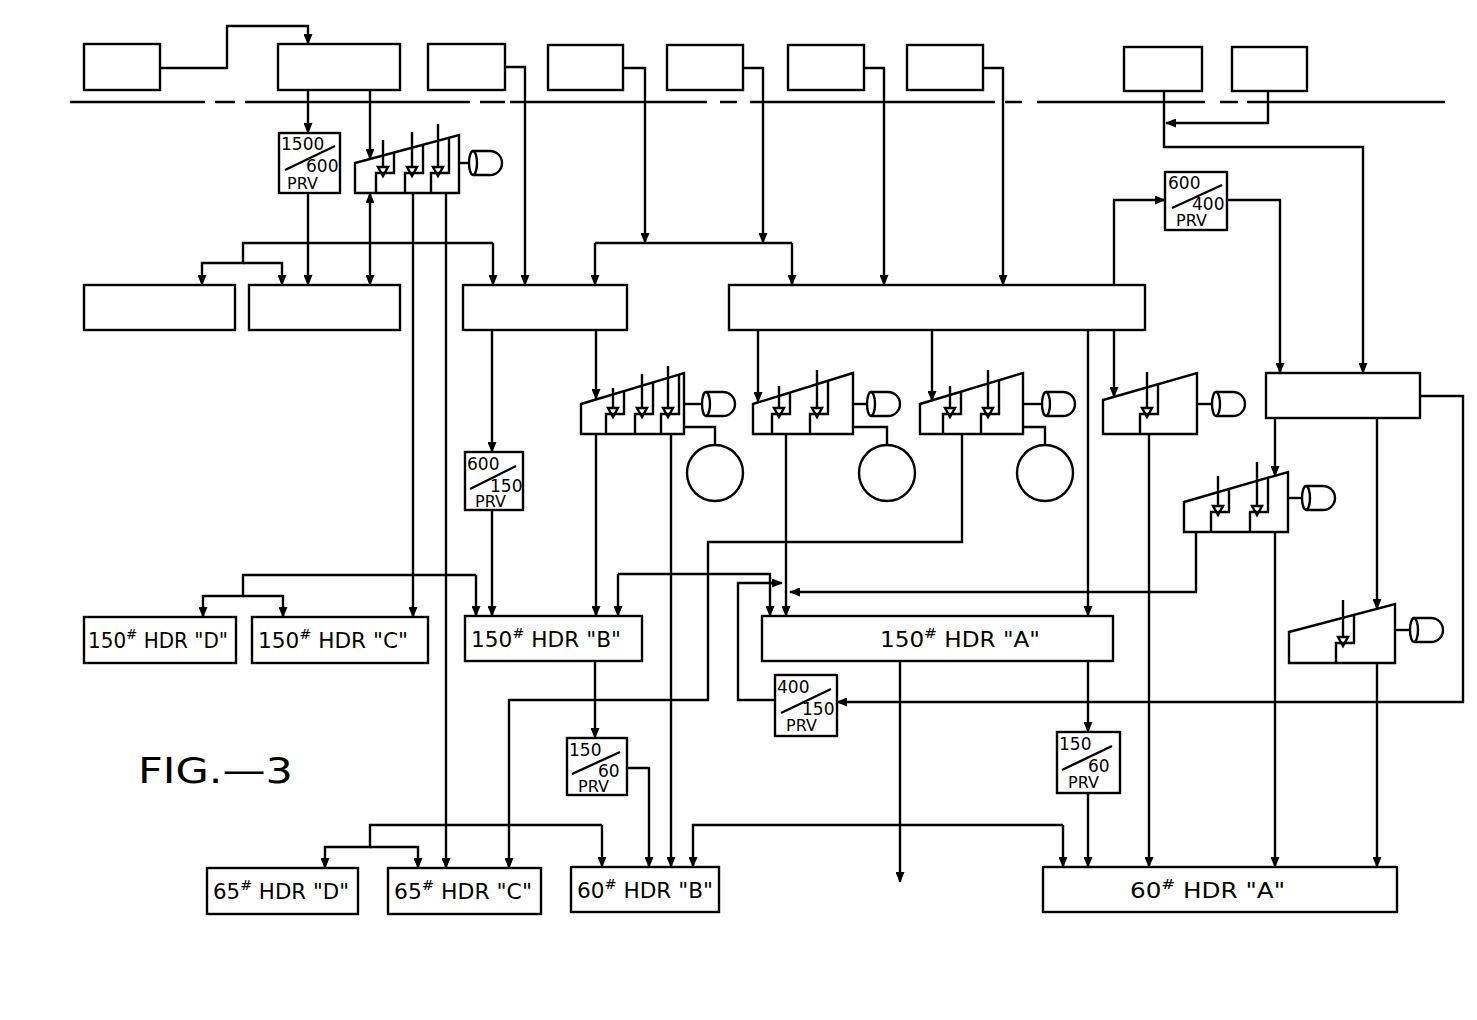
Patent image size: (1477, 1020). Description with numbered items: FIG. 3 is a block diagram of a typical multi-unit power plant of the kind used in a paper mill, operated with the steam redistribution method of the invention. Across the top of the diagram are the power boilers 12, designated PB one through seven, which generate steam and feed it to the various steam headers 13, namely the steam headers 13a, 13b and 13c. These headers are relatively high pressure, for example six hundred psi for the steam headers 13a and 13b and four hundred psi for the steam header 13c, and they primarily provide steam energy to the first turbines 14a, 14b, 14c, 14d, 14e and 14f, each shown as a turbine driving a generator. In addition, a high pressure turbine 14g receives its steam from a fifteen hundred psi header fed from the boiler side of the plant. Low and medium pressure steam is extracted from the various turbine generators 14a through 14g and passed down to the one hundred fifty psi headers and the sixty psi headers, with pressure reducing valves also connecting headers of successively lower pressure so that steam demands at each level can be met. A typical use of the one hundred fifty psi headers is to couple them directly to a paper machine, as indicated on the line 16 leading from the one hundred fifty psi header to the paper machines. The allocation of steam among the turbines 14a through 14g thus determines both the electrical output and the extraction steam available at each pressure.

The power boilers 12 is at (742, 69).
The steam headers 13 is at (312, 330).
The steam header 13a is at (540, 285).
The steam header 13b is at (912, 285).
The steam header 13c is at (1383, 373).
The turbine 14a is at (688, 385).
The turbine 14b is at (857, 385).
The turbine 14c is at (1027, 383).
The turbine 14d is at (1200, 383).
The turbine 14e is at (1256, 534).
The turbine 14f is at (1398, 610).
The high pressure turbine 14g is at (449, 140).
The line 16 is at (900, 782).